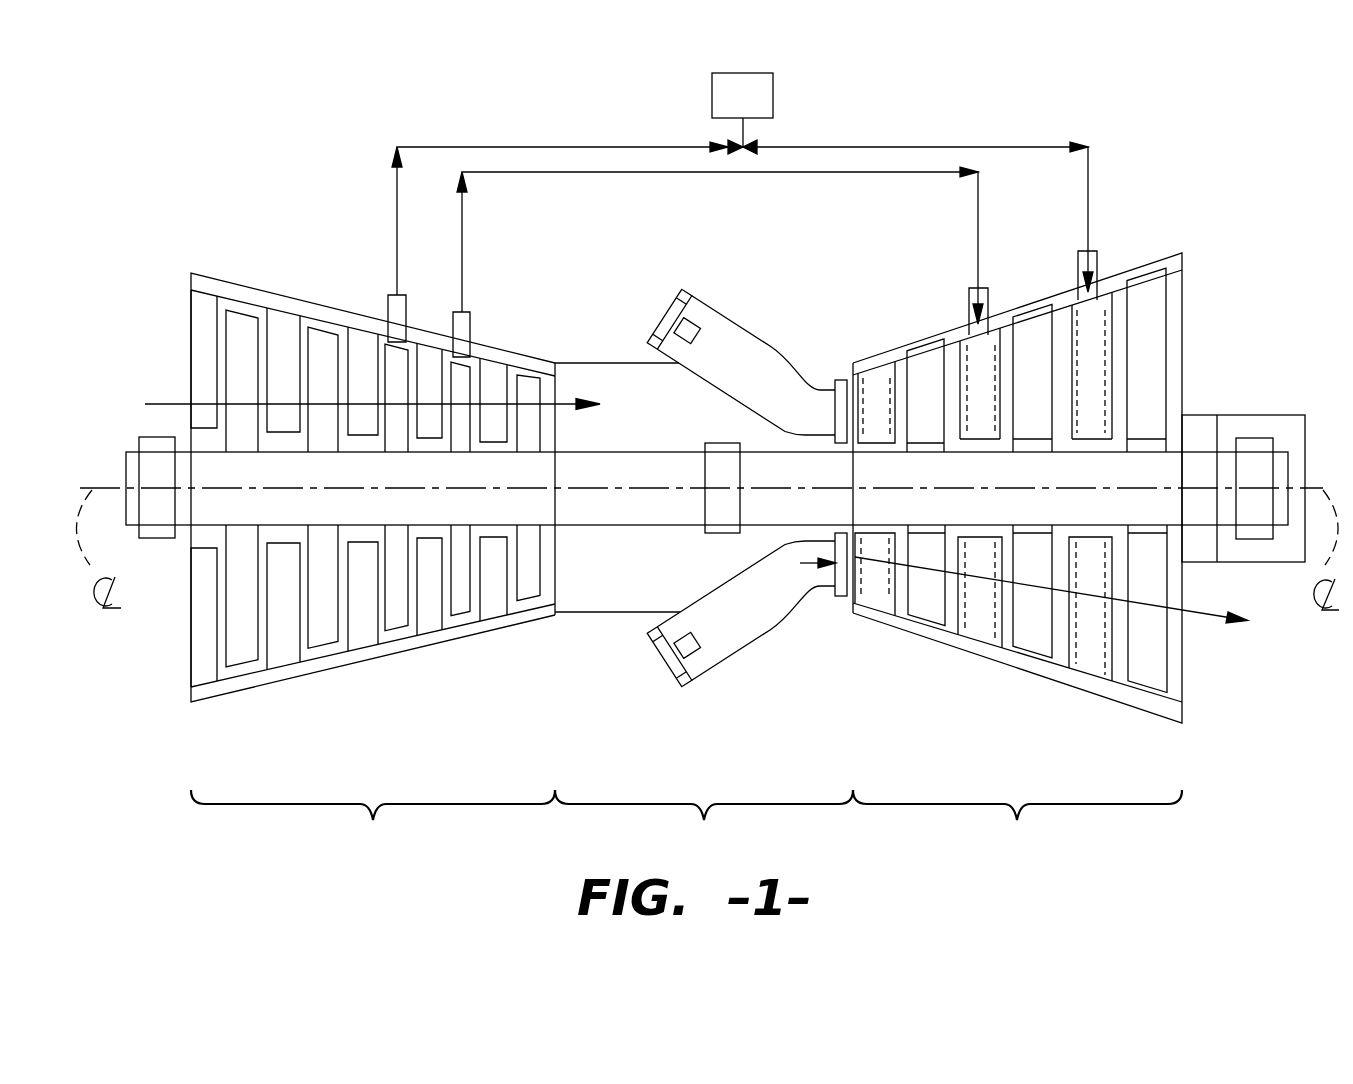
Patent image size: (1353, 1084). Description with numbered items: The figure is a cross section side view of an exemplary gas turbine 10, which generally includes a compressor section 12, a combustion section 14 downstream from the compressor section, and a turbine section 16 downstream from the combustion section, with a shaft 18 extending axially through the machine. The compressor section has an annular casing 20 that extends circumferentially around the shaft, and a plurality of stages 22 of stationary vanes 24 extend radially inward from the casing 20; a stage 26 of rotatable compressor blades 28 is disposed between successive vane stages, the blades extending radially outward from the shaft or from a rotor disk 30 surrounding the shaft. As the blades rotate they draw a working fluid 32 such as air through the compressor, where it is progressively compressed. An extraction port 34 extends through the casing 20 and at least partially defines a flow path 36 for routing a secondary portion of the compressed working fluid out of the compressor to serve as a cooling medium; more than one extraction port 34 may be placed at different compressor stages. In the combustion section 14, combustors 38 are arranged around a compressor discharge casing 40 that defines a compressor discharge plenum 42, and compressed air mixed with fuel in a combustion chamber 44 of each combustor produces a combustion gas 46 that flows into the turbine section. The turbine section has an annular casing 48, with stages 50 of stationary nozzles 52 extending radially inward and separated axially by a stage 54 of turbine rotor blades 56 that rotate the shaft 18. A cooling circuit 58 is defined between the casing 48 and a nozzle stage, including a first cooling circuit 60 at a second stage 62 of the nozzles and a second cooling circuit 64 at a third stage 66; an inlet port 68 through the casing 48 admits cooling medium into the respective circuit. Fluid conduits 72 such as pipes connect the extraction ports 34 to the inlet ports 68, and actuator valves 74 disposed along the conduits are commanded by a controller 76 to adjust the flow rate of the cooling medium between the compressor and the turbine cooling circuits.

The gas turbine 10 is at (707, 465).
The compressor section 12 is at (361, 545).
The combustion section 14 is at (906, 573).
The turbine section 16 is at (1046, 521).
The shaft 18 is at (608, 527).
The annular casing 20 is at (423, 645).
The stages of stationary vanes 22 is at (299, 678).
The stationary vanes 24 is at (271, 617).
The stage of rotatable compressor blades 26 is at (252, 683).
The compressor blades 28 is at (228, 595).
The rotor disk 30 is at (243, 512).
The working fluid 32 is at (166, 403).
The extraction port 34 is at (390, 290).
The flow path 36 is at (393, 316).
The combustor 38 is at (752, 665).
The compressor discharge casing 40 is at (600, 615).
The compressor discharge plenum 42 is at (629, 587).
The combustion chamber 44 is at (726, 621).
The combustion gas 46 is at (787, 582).
The annular casing 48 is at (1168, 725).
The stages of stationary nozzles 50 is at (866, 624).
The stationary nozzles 52 is at (861, 591).
The stage of turbine rotor blades 54 is at (917, 633).
The turbine rotor blades 56 is at (912, 604).
The cooling circuit 58 is at (997, 320).
The first cooling circuit 60 is at (974, 330).
The second stage of stationary nozzles 62 is at (978, 443).
The second cooling circuit 64 is at (1098, 288).
The third stage of stationary nozzles 66 is at (1088, 443).
The inlet port 68 is at (983, 287).
The fluid conduit 72 is at (578, 147).
The actuator valve 74 is at (757, 150).
The controller 76 is at (742, 95).